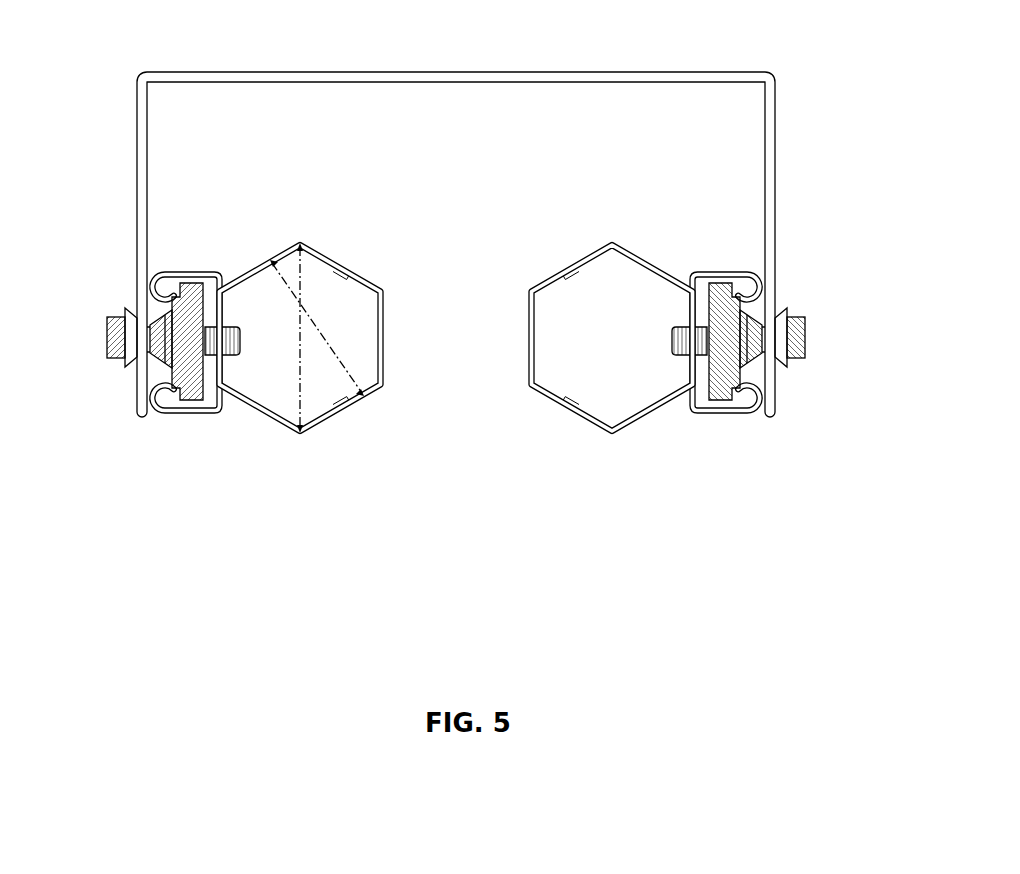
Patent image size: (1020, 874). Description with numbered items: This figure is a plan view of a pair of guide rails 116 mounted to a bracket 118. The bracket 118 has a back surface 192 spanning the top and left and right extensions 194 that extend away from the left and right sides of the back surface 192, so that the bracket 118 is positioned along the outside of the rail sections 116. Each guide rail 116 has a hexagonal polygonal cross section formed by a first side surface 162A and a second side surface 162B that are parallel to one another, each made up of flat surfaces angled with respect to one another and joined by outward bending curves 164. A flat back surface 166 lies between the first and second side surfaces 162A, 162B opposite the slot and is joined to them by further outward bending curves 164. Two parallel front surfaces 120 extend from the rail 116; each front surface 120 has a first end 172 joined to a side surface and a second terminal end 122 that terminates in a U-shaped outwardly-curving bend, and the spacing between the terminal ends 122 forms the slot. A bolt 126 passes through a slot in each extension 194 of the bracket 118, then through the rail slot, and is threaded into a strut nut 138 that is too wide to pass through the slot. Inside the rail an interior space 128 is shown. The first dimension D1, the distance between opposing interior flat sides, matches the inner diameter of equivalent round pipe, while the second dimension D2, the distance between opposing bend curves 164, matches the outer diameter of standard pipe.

The bracket 118 is at (433, 68).
The back surface 192 is at (683, 78).
The left and right extensions 194 is at (143, 127).
The guide rail 116 is at (371, 276).
The front surface 120 is at (182, 271).
The terminal end 122 is at (152, 277).
The bolt 126 is at (112, 362).
The strut nut 138 is at (190, 289).
The interior cavity 128 is at (633, 283).
The first side surface 162A is at (274, 256).
The second side surface 162B is at (275, 421).
The outward bending curve 164 is at (300, 244).
The back surface 166 is at (384, 338).
The first end 172 is at (237, 283).
The first dimension D1 is at (334, 335).
The second dimension D2 is at (299, 348).